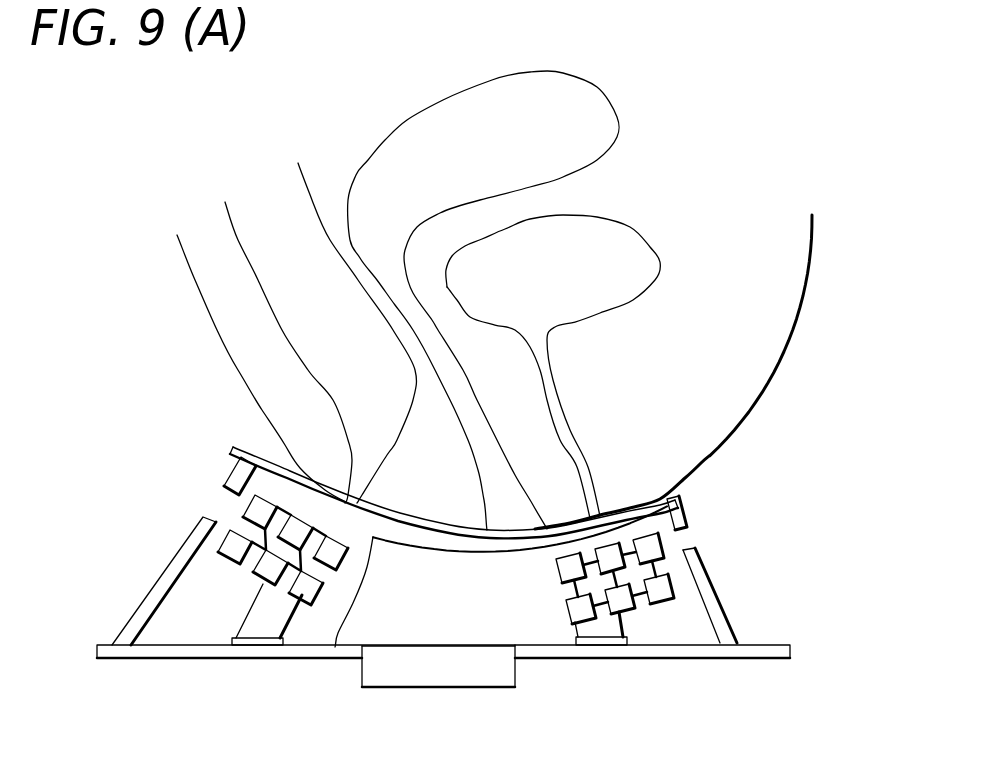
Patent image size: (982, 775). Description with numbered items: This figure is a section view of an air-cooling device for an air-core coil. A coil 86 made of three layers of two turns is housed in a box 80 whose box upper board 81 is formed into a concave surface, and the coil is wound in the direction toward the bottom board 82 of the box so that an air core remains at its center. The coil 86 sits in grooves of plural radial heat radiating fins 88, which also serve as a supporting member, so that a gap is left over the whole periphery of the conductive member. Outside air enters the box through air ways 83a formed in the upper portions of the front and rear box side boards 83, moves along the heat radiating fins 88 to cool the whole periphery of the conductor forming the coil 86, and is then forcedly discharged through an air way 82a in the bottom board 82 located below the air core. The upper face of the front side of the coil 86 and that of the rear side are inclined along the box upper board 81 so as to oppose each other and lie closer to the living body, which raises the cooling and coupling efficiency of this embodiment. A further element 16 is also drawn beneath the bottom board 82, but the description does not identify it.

The connector block 16 is at (518, 672).
The box 80 is at (724, 583).
The box upper board 81 is at (334, 660).
The bottom board 82 is at (757, 657).
The air way 82a is at (513, 652).
The box side boards 83 is at (727, 603).
The air ways 83a is at (693, 543).
The coil 86 is at (242, 510).
The heat radiating fins 88 is at (293, 627).